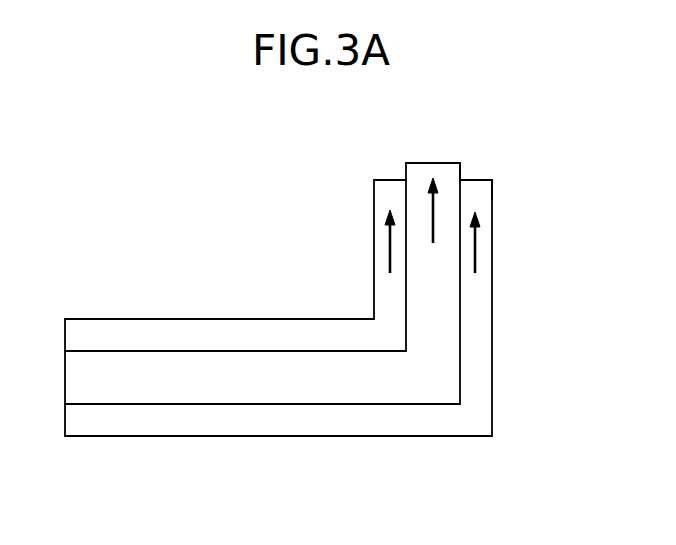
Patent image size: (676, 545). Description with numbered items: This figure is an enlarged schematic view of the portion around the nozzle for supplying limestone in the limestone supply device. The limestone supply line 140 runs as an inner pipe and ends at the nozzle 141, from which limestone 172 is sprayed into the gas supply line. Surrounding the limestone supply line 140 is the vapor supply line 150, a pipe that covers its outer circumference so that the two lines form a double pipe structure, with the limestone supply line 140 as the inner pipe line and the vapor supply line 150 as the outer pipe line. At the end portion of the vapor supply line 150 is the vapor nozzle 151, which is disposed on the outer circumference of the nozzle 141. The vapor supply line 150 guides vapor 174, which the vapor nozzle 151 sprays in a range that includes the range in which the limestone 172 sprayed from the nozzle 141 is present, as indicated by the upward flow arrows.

The limestone supply line 140 is at (257, 386).
The nozzle 141 is at (418, 172).
The vapor supply line 150 is at (209, 334).
The vapor nozzle 151 is at (473, 186).
The limestone 172 is at (436, 196).
The vapor 174 is at (384, 242).